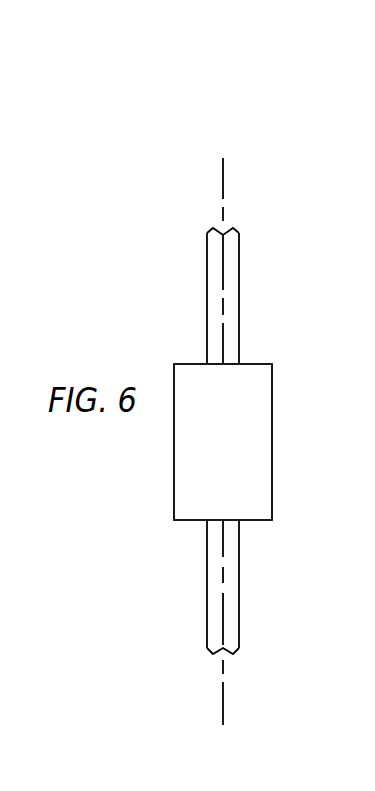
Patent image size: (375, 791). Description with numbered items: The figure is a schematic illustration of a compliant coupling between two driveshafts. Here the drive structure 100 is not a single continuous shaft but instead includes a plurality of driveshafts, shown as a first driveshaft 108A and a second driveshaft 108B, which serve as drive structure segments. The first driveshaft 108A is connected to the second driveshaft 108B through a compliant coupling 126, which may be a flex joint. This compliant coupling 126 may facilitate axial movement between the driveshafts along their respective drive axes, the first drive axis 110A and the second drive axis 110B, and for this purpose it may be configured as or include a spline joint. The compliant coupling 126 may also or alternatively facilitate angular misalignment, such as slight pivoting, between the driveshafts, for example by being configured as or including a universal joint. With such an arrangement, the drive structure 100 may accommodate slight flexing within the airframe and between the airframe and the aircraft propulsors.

The drive structure 100 is at (284, 144).
The first drive axis 110A is at (223, 188).
The second drive axis 110B is at (223, 692).
The first driveshaft 108A is at (249, 274).
The second driveshaft 108B is at (249, 562).
The compliant coupling 126 is at (243, 457).